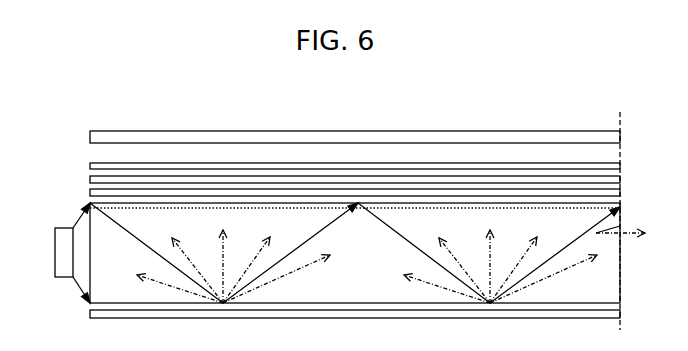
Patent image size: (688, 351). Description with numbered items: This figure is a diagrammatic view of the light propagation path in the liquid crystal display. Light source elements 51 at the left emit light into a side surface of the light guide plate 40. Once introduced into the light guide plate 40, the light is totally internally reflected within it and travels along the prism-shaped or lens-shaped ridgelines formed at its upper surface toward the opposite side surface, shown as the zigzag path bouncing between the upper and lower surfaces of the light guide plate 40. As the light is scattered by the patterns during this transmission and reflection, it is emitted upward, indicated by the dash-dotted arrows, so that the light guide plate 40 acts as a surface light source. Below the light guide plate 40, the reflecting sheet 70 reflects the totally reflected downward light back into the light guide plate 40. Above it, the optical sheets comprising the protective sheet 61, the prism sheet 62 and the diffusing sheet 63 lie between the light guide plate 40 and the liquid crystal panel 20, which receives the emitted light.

The liquid crystal panel 20 is at (620, 135).
The protective sheet 61 is at (462, 163).
The prism sheet 62 is at (502, 176).
The diffusing sheet 63 is at (545, 189).
The light guide plate 40 is at (620, 272).
The light source element 51 is at (53, 253).
The reflecting sheet 70 is at (620, 313).